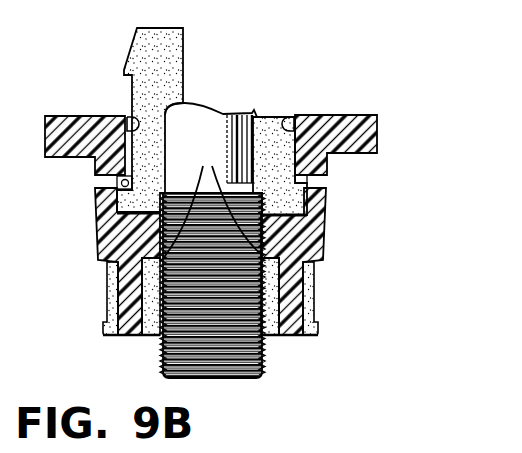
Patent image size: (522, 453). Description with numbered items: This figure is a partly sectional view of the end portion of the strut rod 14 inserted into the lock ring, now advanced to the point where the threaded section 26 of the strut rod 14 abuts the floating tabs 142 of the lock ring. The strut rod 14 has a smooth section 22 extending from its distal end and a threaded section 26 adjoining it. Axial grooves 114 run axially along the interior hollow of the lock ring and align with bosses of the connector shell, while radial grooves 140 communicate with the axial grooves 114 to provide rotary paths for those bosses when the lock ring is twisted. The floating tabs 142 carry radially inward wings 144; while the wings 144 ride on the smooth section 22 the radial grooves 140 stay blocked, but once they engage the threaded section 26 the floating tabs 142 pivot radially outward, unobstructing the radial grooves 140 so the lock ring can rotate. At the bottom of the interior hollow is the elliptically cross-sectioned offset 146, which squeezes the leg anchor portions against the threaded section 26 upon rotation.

The strut rod 14 is at (265, 117).
The smooth section 22 is at (194, 115).
The threaded section 26 is at (262, 350).
The axial grooves 114 is at (134, 117).
The radial grooves 140 is at (290, 193).
The floating tabs 142 is at (95, 236).
The radially inward wings 144 is at (207, 168).
The offset 146 is at (153, 333).